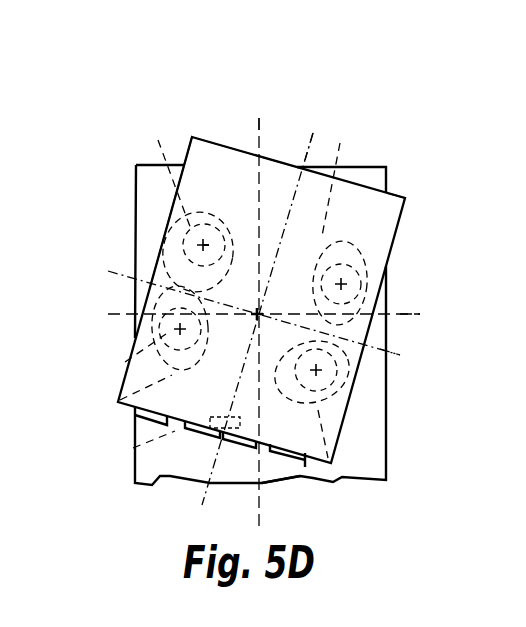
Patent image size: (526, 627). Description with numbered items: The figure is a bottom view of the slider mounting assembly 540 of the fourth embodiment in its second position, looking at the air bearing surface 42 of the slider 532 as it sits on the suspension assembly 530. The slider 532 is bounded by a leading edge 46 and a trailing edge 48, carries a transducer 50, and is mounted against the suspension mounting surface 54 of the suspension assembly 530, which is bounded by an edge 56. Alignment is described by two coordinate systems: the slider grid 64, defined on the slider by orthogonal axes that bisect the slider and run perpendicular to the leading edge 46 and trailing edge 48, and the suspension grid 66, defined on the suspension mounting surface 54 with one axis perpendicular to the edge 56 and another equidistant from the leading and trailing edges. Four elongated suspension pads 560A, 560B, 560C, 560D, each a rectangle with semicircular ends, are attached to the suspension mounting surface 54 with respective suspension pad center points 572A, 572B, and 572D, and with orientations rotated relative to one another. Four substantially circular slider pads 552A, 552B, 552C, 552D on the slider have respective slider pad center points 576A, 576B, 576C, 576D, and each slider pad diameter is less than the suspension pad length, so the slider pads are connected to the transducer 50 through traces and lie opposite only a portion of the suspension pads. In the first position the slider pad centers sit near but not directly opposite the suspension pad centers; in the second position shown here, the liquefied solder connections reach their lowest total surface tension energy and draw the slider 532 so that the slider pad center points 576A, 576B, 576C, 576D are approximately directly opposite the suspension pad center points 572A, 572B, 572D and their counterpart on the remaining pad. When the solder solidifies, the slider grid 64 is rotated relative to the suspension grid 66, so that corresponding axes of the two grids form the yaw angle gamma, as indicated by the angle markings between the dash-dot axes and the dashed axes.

The air bearing surface 42 is at (371, 215).
The leading edge 46 is at (405, 198).
The trailing edge 48 is at (318, 473).
The transducer 50 is at (133, 447).
The suspension mounting surface 54 is at (168, 472).
The edge 56 is at (372, 167).
The slider grid 64 is at (271, 294).
The suspension grid 66 is at (229, 288).
The suspension assembly 530 is at (178, 158).
The slider 532 is at (233, 146).
The slider mounting assembly 540 is at (328, 60).
The slider pad 552A is at (155, 253).
The slider pad 552B is at (158, 312).
The slider pad 552C is at (347, 377).
The slider pad 552D is at (358, 266).
The suspension pad 560A is at (150, 263).
The suspension pad 560B is at (118, 402).
The suspension pad 560C is at (362, 414).
The suspension pad 560D is at (393, 260).
The suspension pad center point 572A is at (130, 173).
The slider pad center point 576A is at (130, 173).
The suspension pad center point 572B is at (84, 357).
The slider pad center point 576B is at (126, 362).
The slider pad center point 576C is at (337, 486).
The suspension pad center point 572D is at (383, 177).
The slider pad center point 576D is at (383, 177).